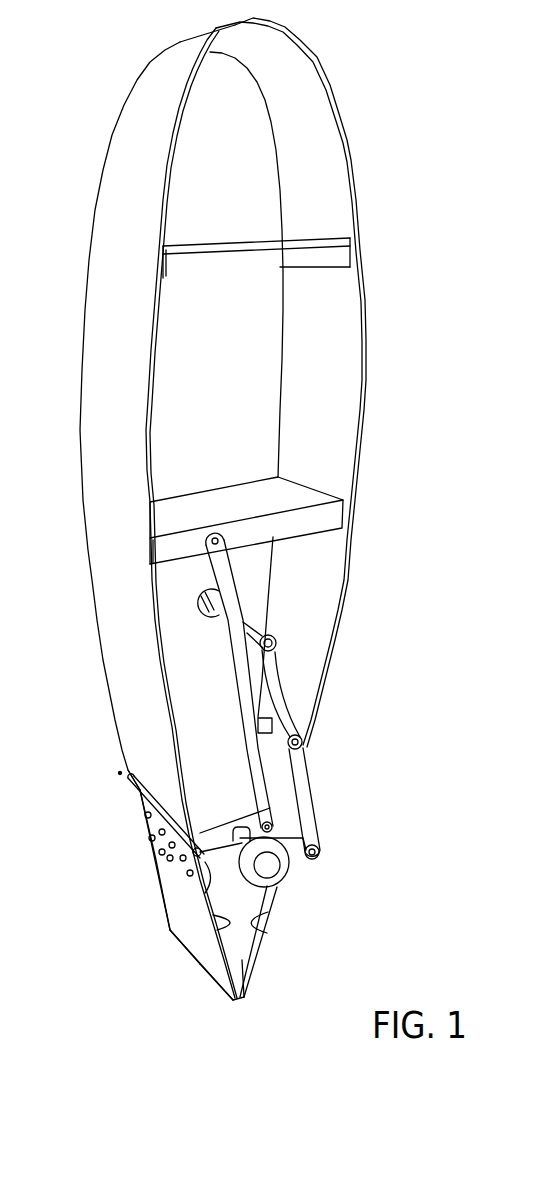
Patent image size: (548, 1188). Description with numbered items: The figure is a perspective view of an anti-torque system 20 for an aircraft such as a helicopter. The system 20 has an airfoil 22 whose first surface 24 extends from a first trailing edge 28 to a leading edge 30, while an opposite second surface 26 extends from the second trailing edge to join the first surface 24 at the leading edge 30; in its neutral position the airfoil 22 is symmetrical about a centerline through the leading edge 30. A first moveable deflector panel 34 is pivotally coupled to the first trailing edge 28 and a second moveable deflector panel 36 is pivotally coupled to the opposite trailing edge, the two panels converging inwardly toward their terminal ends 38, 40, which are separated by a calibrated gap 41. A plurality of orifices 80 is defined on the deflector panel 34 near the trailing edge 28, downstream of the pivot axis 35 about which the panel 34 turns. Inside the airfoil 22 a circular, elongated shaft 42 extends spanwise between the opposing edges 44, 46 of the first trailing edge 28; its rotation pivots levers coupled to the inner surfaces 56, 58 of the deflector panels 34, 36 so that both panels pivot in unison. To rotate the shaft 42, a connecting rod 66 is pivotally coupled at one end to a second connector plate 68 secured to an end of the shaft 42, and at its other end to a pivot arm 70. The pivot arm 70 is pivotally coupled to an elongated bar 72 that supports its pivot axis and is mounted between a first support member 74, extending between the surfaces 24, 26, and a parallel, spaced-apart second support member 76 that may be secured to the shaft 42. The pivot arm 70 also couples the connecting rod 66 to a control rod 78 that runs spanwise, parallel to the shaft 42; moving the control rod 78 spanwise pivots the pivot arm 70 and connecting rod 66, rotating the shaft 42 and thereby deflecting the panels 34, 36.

The anti-torque system 20 is at (96, 73).
The airfoil 22 is at (328, 58).
The first surface 24 is at (120, 190).
The second surface 26 is at (351, 160).
The first trailing edge 28 is at (140, 792).
The leading edge 30 is at (180, 40).
The first moveable deflector panel 34 is at (168, 883).
The pivot axis 35 is at (109, 759).
The second moveable deflector panel 36 is at (258, 953).
The terminal end 38 is at (207, 977).
The terminal end 40 is at (250, 1007).
The calibrated gap 41 is at (240, 1013).
The shaft 42 is at (272, 868).
The opposing edge 44 is at (128, 793).
The opposing edge 46 is at (213, 895).
The inner surface 56 is at (220, 933).
The inner surface 58 is at (248, 923).
The connecting rod 66 is at (315, 797).
The second connector plate 68 is at (290, 878).
The pivot arm 70 is at (267, 695).
The elongated bar 72 is at (227, 567).
The first support member 74 is at (312, 500).
The second support member 76 is at (220, 796).
The control rod 78 is at (245, 620).
The orifices 80 is at (160, 850).